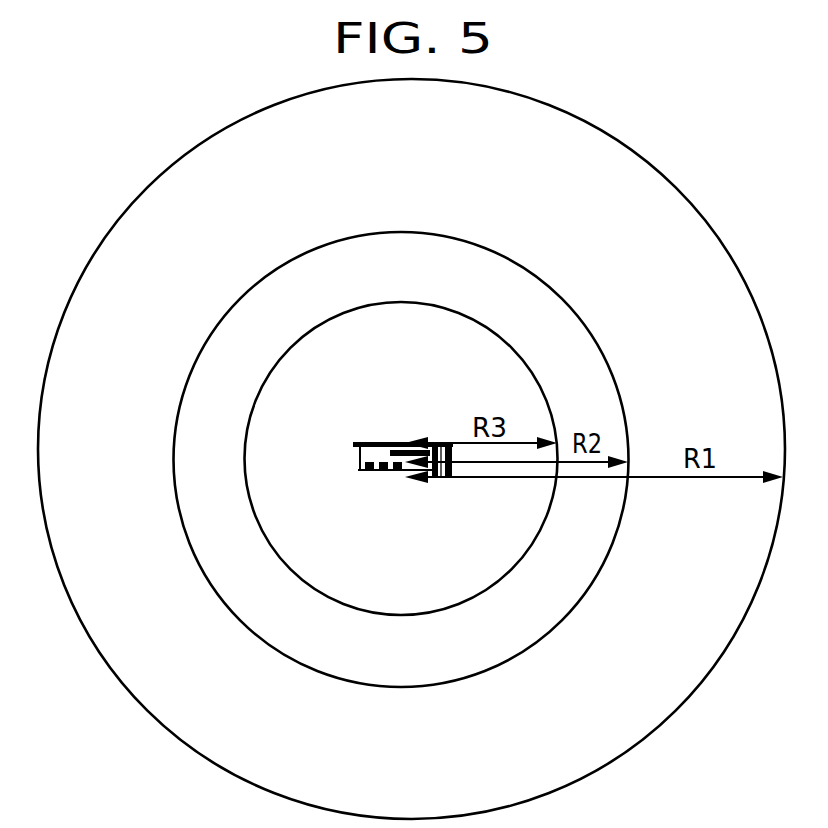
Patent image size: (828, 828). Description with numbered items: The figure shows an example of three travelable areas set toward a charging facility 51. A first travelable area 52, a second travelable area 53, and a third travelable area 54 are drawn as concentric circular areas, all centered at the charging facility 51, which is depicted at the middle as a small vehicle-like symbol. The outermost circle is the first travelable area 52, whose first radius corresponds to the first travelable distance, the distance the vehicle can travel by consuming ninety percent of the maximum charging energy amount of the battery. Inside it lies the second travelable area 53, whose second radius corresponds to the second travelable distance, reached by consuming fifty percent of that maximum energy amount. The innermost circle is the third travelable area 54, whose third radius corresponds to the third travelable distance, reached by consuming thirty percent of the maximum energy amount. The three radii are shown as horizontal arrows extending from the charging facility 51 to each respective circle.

The charging facility 51 is at (362, 463).
The first travelable area 52 is at (594, 210).
The second travelable area 53 is at (553, 338).
The third travelable area 54 is at (424, 344).